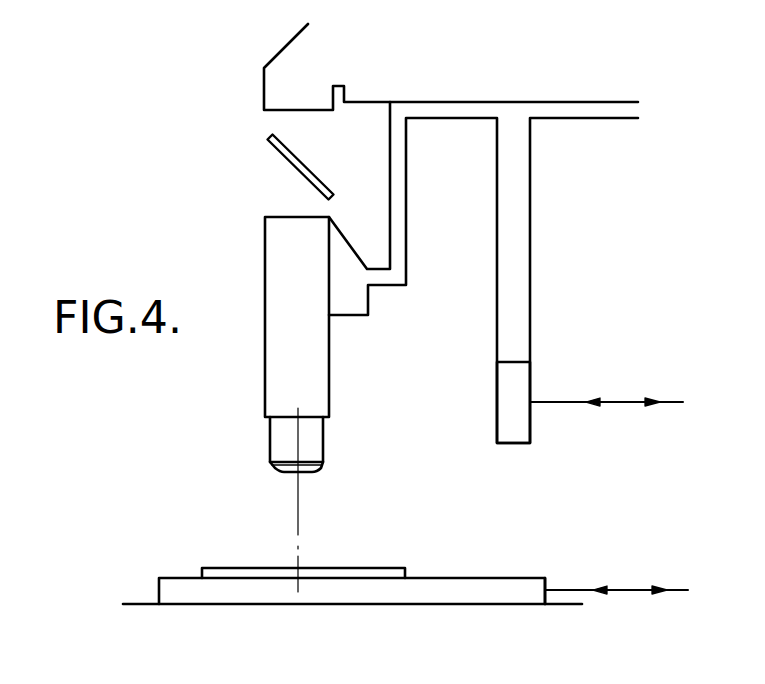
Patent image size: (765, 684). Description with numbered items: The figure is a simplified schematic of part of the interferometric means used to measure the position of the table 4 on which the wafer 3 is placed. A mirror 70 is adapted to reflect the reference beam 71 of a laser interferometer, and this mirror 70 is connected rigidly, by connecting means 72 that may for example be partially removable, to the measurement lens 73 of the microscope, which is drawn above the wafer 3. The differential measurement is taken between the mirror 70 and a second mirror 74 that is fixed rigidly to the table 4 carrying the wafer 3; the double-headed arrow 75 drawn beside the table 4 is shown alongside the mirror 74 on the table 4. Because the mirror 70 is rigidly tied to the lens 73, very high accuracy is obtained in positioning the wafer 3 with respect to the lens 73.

The wafer 3 is at (368, 573).
The table 4 is at (433, 593).
The mirror 70 is at (518, 400).
The reference beam 71 is at (627, 400).
The connecting means 72 is at (440, 157).
The measurement lens 73 is at (316, 375).
The mirror 74 is at (548, 582).
The stage movement direction 75 is at (588, 590).